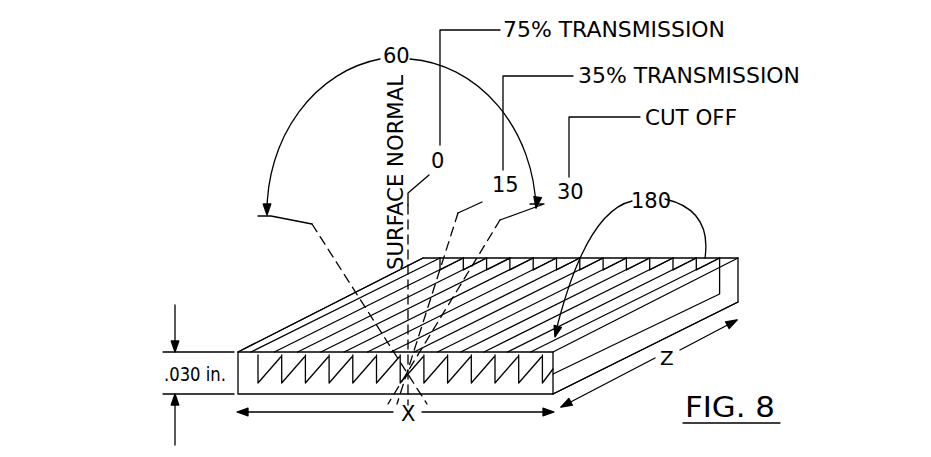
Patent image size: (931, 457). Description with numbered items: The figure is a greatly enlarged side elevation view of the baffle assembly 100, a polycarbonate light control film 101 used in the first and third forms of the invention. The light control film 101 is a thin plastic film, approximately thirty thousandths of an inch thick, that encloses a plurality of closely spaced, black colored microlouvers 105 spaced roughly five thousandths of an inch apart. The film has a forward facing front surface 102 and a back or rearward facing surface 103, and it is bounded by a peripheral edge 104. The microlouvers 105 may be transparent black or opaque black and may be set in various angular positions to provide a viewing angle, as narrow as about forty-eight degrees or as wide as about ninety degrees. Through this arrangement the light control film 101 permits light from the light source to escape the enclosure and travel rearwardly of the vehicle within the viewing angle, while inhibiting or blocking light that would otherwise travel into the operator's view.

The baffle assembly 100 is at (707, 204).
The light control film 101 is at (733, 283).
The front surface 102 is at (723, 255).
The rearward facing surface 103 is at (702, 322).
The peripheral edge 104 is at (283, 327).
The microlouvers 105 is at (333, 316).